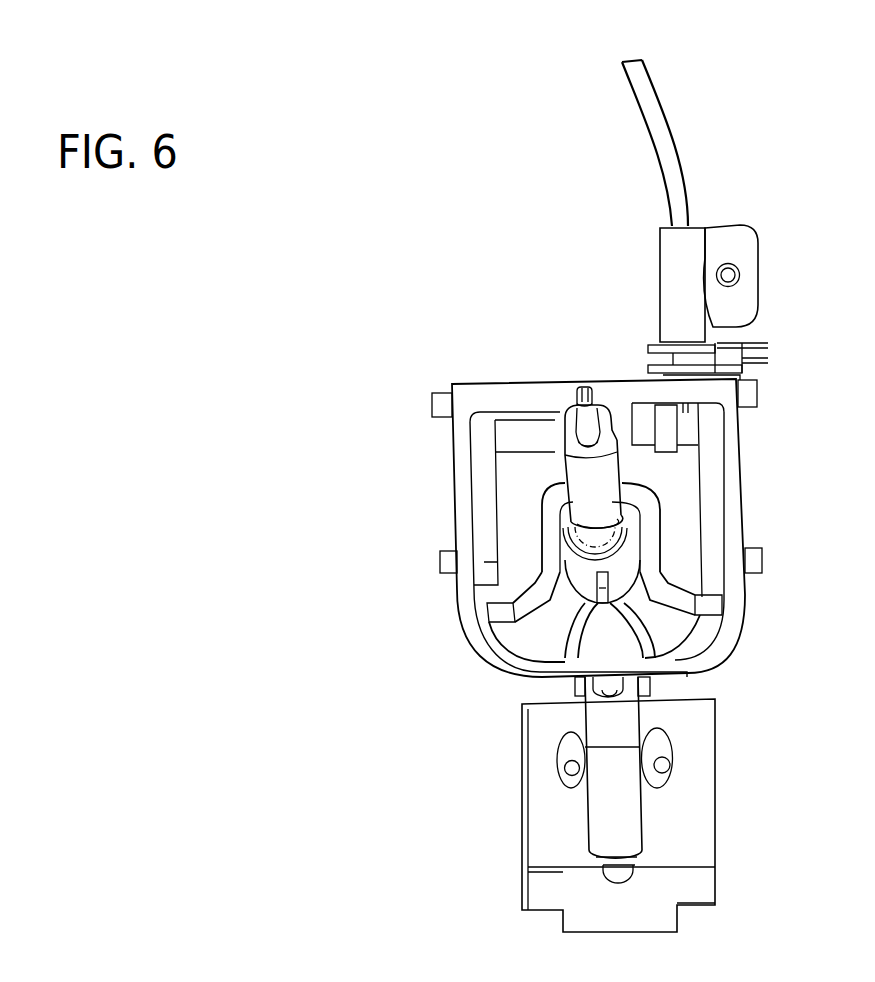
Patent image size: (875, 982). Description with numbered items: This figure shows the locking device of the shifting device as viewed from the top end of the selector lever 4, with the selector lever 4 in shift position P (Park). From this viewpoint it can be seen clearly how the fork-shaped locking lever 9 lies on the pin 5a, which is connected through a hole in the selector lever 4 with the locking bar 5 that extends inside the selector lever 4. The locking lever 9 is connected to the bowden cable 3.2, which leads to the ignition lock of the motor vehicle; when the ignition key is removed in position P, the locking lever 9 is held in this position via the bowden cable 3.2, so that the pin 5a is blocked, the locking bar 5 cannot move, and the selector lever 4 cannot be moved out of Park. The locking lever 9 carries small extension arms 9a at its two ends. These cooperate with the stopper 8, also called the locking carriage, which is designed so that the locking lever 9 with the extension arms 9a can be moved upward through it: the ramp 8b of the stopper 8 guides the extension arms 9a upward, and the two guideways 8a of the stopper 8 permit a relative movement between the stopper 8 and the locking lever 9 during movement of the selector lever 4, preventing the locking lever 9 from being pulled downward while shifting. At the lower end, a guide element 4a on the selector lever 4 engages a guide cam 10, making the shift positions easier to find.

The bowden cable 3.2 is at (674, 191).
The selector lever 4 is at (588, 487).
The guide element 4a is at (624, 809).
The locking bar 5 is at (590, 385).
The pin 5a is at (537, 612).
The stopper 8 is at (733, 491).
The guideways 8a is at (483, 516).
The ramp 8b is at (714, 579).
The locking lever 9 is at (646, 509).
The extension arms 9a is at (493, 617).
The guide cam 10 is at (668, 756).